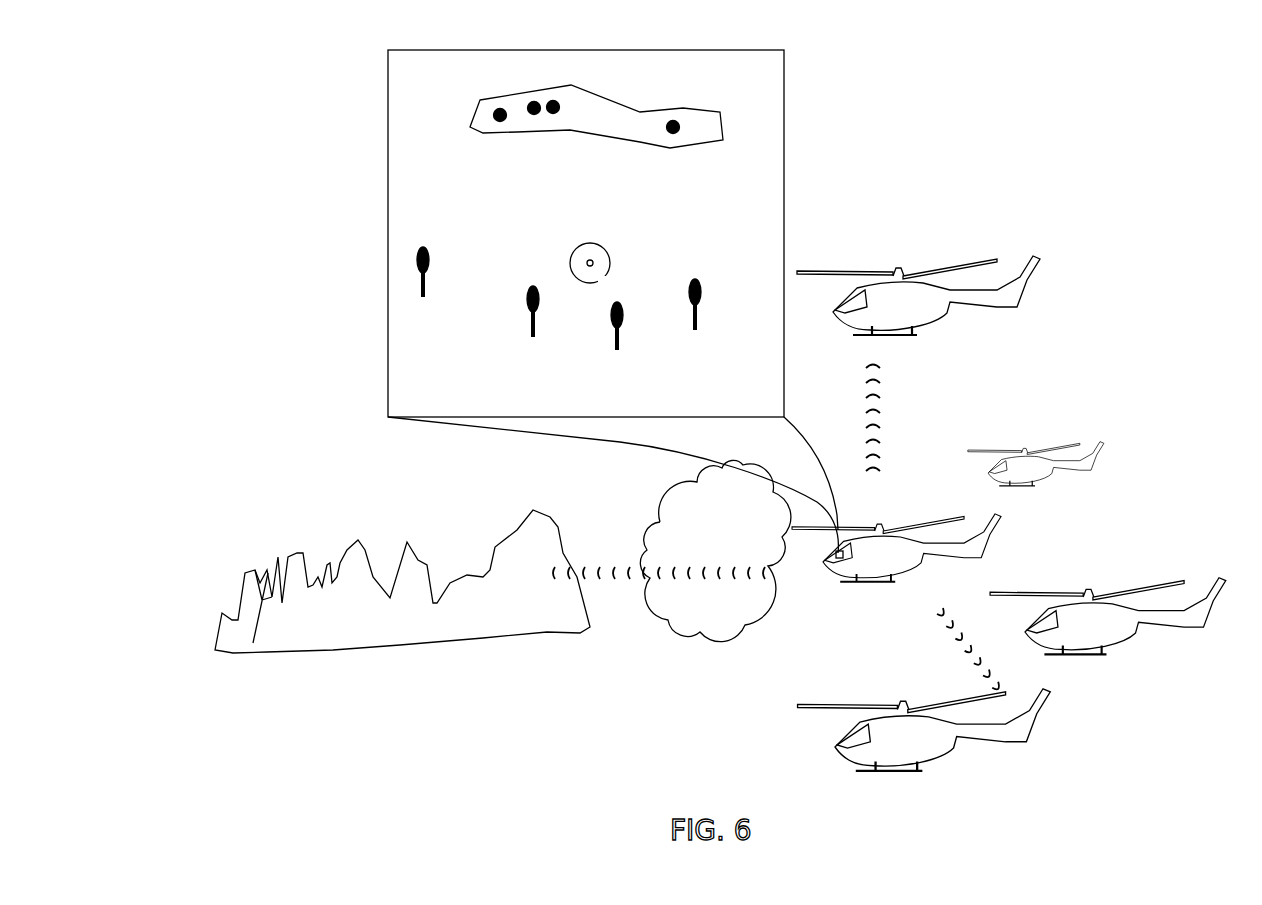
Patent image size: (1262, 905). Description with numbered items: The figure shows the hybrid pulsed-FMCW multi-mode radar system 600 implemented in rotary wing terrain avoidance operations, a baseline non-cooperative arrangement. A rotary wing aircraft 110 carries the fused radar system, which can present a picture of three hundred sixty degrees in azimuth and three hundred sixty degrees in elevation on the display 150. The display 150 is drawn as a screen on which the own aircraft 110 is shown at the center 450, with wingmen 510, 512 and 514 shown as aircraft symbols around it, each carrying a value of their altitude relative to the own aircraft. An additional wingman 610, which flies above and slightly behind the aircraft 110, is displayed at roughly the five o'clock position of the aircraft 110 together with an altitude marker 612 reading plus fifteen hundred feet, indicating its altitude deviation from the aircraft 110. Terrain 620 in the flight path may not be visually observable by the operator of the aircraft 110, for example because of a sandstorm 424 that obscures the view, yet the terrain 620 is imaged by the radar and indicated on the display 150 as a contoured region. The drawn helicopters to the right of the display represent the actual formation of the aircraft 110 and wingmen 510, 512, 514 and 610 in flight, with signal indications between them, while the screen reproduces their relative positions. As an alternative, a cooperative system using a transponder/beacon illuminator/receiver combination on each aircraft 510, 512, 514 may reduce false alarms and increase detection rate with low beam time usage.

The system 600 is at (213, 145).
The display 150 is at (387, 128).
The terrain 620 is at (687, 107).
The center 450 is at (570, 250).
The wingman 510 is at (415, 258).
The wingman 512 is at (525, 303).
The wingman 514 is at (710, 293).
The additional wingman 610 is at (610, 328).
The altitude marker 612 is at (623, 272).
The aircraft 110 is at (882, 588).
The sandstorm 424 is at (738, 647).